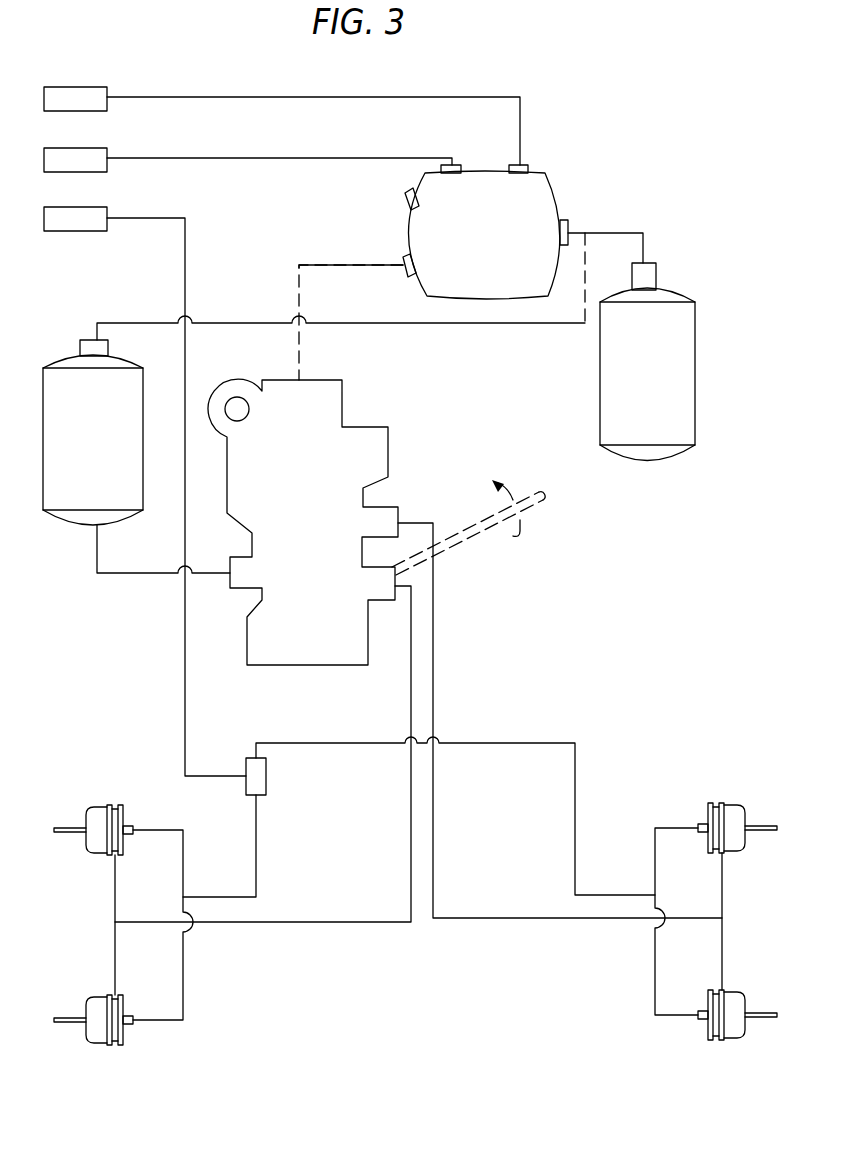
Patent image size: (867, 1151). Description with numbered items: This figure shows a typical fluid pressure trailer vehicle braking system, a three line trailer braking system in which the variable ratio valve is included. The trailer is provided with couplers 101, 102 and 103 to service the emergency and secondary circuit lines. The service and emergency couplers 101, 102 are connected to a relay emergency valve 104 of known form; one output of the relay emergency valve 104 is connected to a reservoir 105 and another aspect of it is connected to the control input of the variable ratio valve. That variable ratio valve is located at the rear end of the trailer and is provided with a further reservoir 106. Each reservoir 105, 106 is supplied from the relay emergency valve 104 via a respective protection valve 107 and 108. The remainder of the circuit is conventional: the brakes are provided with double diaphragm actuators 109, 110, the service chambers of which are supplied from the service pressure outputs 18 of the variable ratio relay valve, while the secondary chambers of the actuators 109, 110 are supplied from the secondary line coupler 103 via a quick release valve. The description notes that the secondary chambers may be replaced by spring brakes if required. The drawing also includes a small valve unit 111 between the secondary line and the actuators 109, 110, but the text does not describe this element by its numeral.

The service pressure outputs 18 is at (372, 518).
The coupler 101 is at (96, 95).
The coupler 102 is at (92, 158).
The secondary line coupler 103 is at (96, 216).
The relay emergency valve 104 is at (528, 193).
The reservoir 105 is at (615, 372).
The further reservoir 106 is at (82, 497).
The protection valve 107 is at (650, 271).
The protection valve 108 is at (92, 345).
The double diaphragm actuators 109 is at (98, 941).
The double diaphragm actuators 110 is at (764, 938).
The relay valve 111 is at (268, 767).